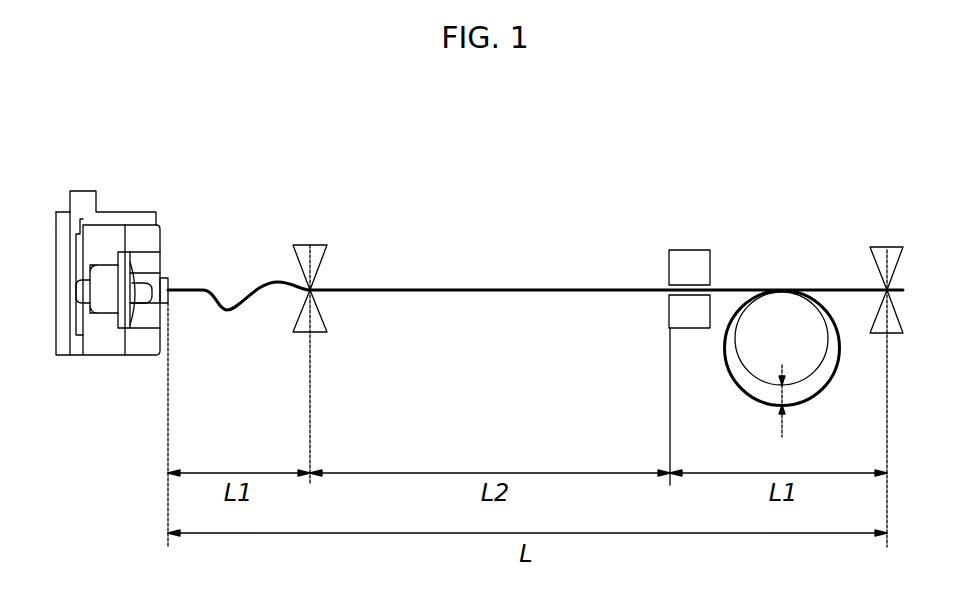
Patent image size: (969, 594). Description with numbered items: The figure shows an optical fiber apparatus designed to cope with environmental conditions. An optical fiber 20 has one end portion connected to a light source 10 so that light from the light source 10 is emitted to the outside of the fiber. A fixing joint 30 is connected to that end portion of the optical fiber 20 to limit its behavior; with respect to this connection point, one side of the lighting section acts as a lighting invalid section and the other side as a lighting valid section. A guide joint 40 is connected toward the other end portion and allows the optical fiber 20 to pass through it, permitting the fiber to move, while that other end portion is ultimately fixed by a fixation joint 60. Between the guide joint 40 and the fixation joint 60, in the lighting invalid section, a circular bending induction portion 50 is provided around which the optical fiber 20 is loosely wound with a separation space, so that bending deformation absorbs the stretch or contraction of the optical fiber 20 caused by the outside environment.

The light source 10 is at (130, 196).
The optical fiber 20 is at (432, 292).
The fixing joint 30 is at (310, 243).
The guide joint 40 is at (690, 258).
The bending induction portion 50 is at (783, 315).
The fixation joint 60 is at (887, 255).